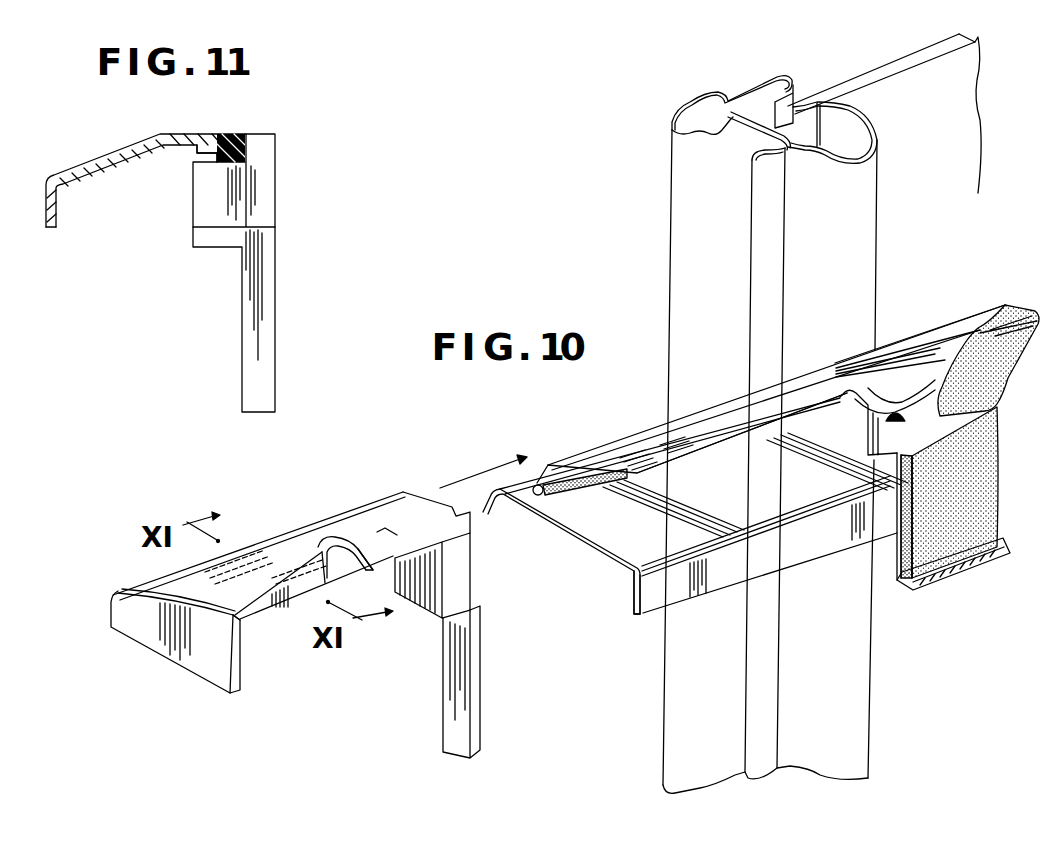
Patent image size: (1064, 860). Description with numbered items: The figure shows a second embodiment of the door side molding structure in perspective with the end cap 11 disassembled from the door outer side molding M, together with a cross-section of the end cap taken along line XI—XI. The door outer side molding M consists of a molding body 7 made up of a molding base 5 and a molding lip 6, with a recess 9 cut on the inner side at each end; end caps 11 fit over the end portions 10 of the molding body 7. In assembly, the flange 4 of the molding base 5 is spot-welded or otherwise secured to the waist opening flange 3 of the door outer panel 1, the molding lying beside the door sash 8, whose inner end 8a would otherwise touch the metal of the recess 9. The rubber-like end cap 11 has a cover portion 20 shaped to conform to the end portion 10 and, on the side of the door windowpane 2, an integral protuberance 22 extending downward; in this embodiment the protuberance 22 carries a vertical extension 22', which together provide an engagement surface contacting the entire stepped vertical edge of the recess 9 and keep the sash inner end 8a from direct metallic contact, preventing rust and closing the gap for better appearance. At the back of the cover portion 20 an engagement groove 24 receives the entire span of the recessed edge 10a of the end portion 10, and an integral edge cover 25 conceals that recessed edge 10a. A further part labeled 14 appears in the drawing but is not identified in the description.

In FIG. 10, the door outer panel 1 is at (695, 506).
In FIG. 10, the door windowpane 2 is at (980, 147).
In FIG. 10, the waist opening flange 3 is at (634, 595).
In FIG. 10, the flange 4 is at (897, 563).
In FIG. 10, the molding base 5 is at (928, 340).
In FIG. 10, the molding lip 6 is at (1020, 352).
In FIG. 10, the molding body 7 is at (975, 493).
In FIG. 10, the door sash 8 is at (677, 114).
In FIG. 10, the inner end 8a is at (796, 85).
In FIG. 10, the recess 9 is at (723, 452).
In FIG. 10, the end portion 10 is at (769, 415).
In FIG. 10, the recessed edge 10a is at (683, 458).
In FIG. 11, the end cap 11 is at (144, 169).
In FIG. 10, the end cap 11 is at (290, 579).
In FIG. 10, the curled lip of cover plate 14 is at (548, 497).
In FIG. 11, the cover portion 20 is at (130, 146).
In FIG. 10, the cover portion 20 is at (290, 592).
In FIG. 11, the protuberance 22 is at (256, 180).
In FIG. 10, the protuberance 22 is at (453, 575).
In FIG. 11, the vertical extension 22' is at (259, 319).
In FIG. 10, the vertical extension 22' is at (482, 682).
In FIG. 11, the engagement groove 24 is at (203, 145).
In FIG. 10, the engagement groove 24 is at (357, 556).
In FIG. 11, the edge cover 25 is at (217, 165).
In FIG. 10, the edge cover 25 is at (388, 567).
In FIG. 10, the door outer side molding M is at (949, 421).